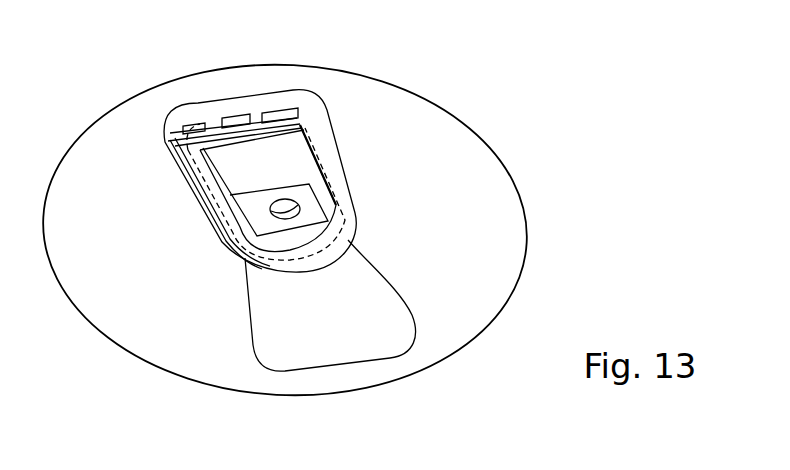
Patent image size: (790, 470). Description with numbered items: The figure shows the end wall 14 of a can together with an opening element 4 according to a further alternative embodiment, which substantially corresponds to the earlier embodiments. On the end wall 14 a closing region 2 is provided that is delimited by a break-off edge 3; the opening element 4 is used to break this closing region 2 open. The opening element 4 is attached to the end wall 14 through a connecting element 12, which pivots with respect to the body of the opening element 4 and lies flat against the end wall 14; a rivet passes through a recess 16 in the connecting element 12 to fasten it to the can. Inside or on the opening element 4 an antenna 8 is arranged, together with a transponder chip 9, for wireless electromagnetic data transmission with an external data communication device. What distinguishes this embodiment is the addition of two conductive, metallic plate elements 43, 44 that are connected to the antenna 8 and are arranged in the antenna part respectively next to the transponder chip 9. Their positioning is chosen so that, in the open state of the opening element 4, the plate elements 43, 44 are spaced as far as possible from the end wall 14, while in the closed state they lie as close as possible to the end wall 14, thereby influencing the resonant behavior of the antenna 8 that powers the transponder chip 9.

The closing region 2 is at (293, 317).
The break-off edge 3 is at (397, 293).
The opening element 4 is at (264, 142).
The antenna 8 is at (320, 162).
The transponder chip 9 is at (242, 118).
The connecting element 12 is at (288, 209).
The end wall 14 is at (483, 215).
The recess 16 is at (272, 214).
The plate element 43 is at (200, 128).
The plate element 44 is at (273, 118).